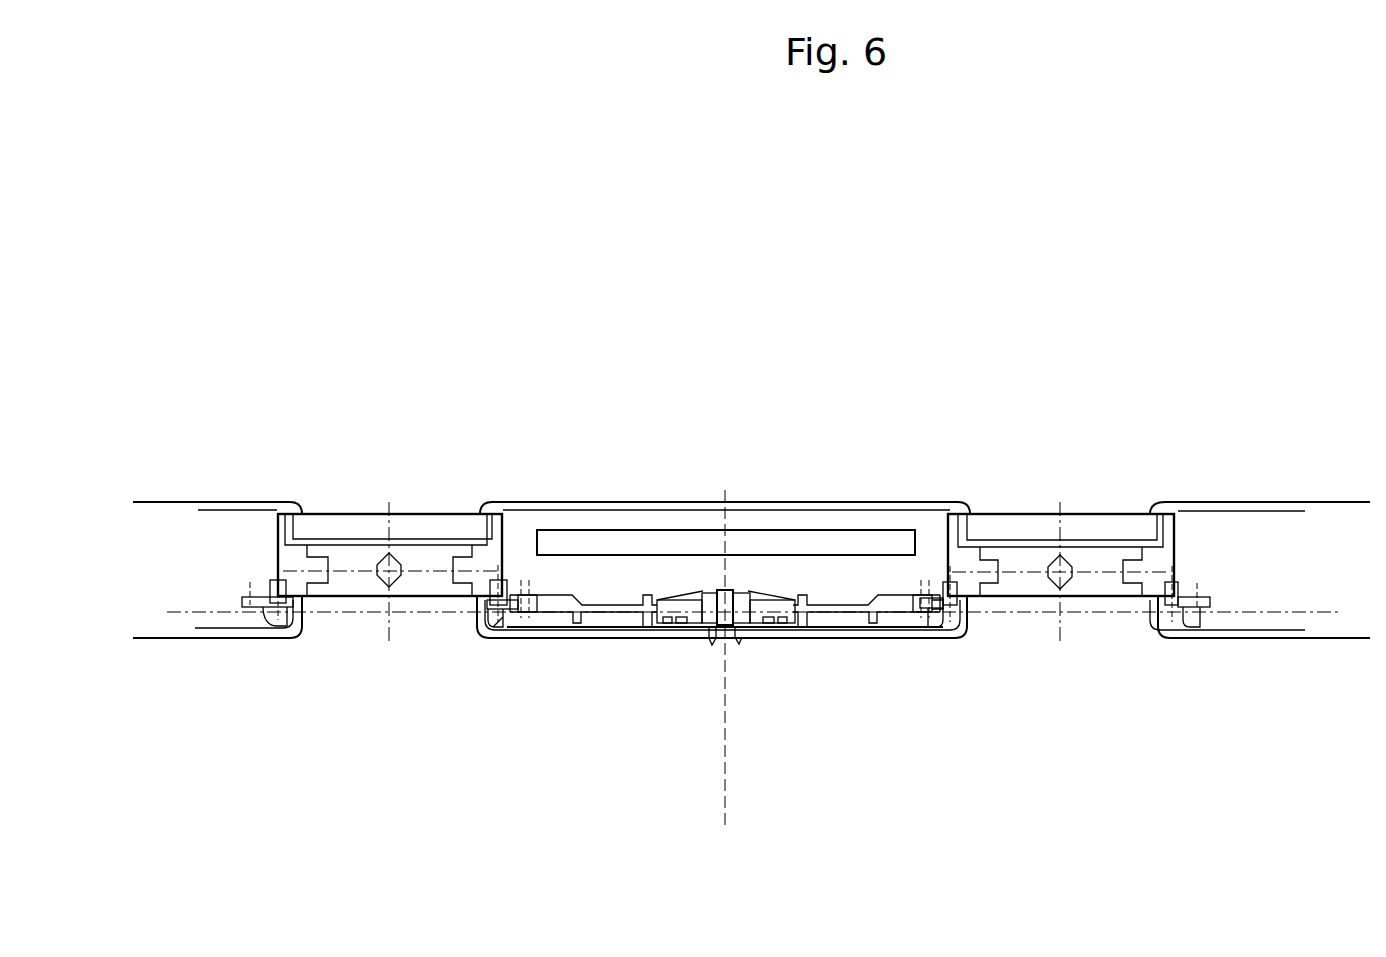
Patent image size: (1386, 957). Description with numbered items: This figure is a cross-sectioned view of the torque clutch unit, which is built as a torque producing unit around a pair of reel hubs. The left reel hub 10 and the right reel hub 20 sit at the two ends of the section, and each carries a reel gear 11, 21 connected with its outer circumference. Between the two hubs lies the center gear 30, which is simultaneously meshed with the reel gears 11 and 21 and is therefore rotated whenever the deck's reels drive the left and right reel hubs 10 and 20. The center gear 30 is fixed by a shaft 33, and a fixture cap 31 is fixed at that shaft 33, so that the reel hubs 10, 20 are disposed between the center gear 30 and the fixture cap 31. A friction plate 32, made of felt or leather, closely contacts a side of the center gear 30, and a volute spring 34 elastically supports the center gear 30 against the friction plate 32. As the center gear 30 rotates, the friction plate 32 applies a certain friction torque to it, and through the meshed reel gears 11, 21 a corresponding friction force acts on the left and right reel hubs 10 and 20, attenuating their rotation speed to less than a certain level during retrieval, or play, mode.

The left reel hub 10 is at (303, 582).
The reel gear 11 is at (497, 618).
The right reel hub 20 is at (1170, 560).
The reel gear 21 is at (1075, 560).
The center gear 30 is at (578, 600).
The fixture cap 31 is at (722, 592).
The friction plate 32 is at (655, 598).
The shaft 33 is at (735, 640).
The volute spring 34 is at (673, 625).